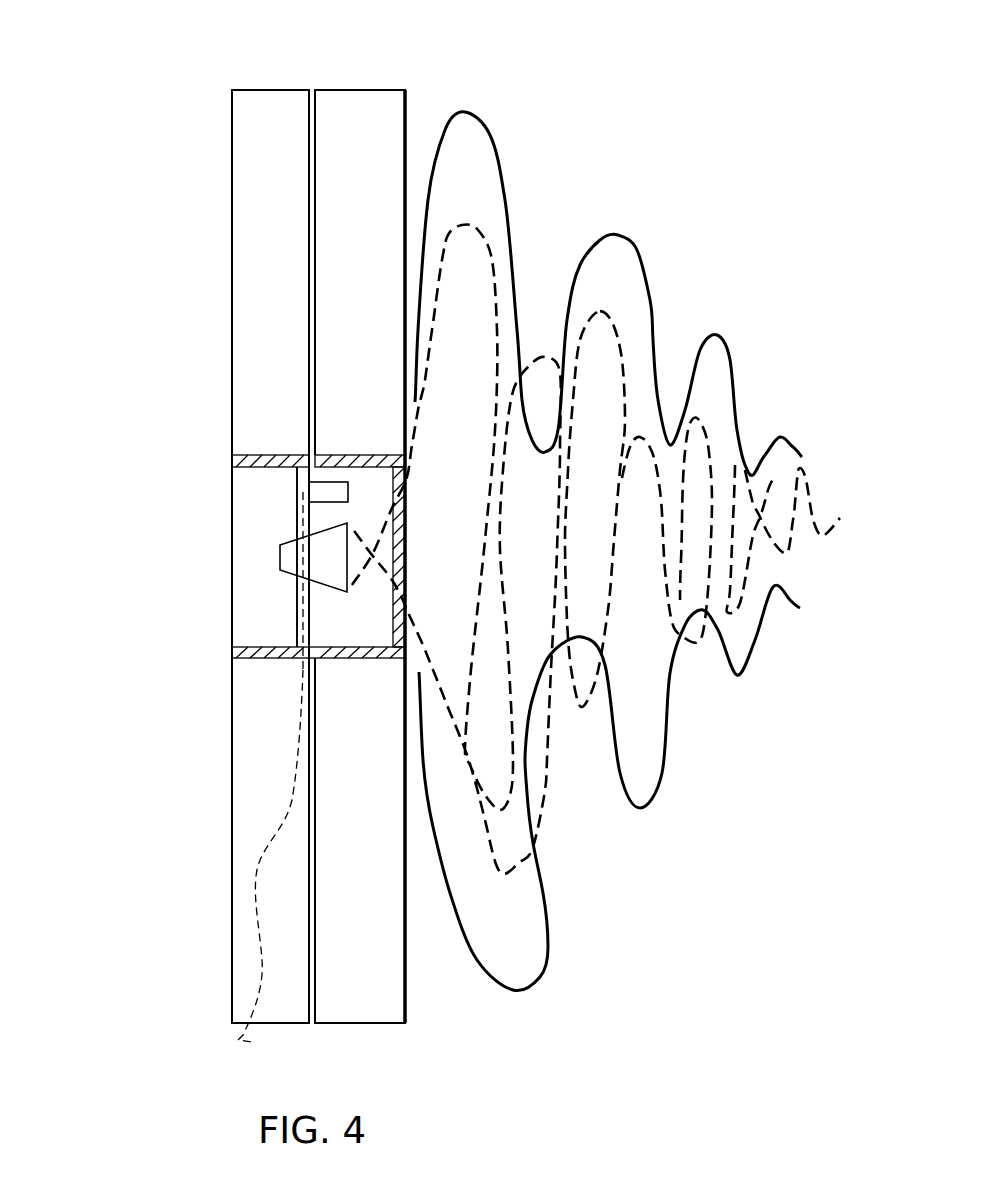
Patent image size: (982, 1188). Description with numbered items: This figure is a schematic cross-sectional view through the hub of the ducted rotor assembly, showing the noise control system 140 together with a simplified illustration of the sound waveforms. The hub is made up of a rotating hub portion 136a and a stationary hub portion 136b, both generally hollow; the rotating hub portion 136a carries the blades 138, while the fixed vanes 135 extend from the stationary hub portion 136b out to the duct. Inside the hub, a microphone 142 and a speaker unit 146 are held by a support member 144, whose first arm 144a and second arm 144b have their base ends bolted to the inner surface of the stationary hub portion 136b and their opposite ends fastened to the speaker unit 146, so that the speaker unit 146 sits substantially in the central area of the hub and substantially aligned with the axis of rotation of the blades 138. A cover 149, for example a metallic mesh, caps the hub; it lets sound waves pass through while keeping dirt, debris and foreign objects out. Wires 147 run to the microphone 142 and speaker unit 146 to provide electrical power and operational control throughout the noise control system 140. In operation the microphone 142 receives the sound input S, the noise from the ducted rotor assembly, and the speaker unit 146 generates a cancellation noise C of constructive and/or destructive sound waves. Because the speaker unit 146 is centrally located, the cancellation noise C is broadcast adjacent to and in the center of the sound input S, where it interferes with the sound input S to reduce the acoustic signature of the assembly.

The fixed vanes 135 is at (270, 90).
The blades 138 is at (358, 90).
The rotating hub portion 136a is at (336, 455).
The stationary hub portion 136b is at (285, 455).
The noise control system 140 is at (128, 535).
The microphone 142 is at (318, 487).
The support member 144 is at (288, 617).
The first arm 144a is at (294, 595).
The second arm 144b is at (294, 516).
The speaker unit 146 is at (280, 557).
The wires 147 is at (250, 882).
The cover 149 is at (392, 640).
The sound input S is at (497, 134).
The cancellation noise C is at (494, 258).